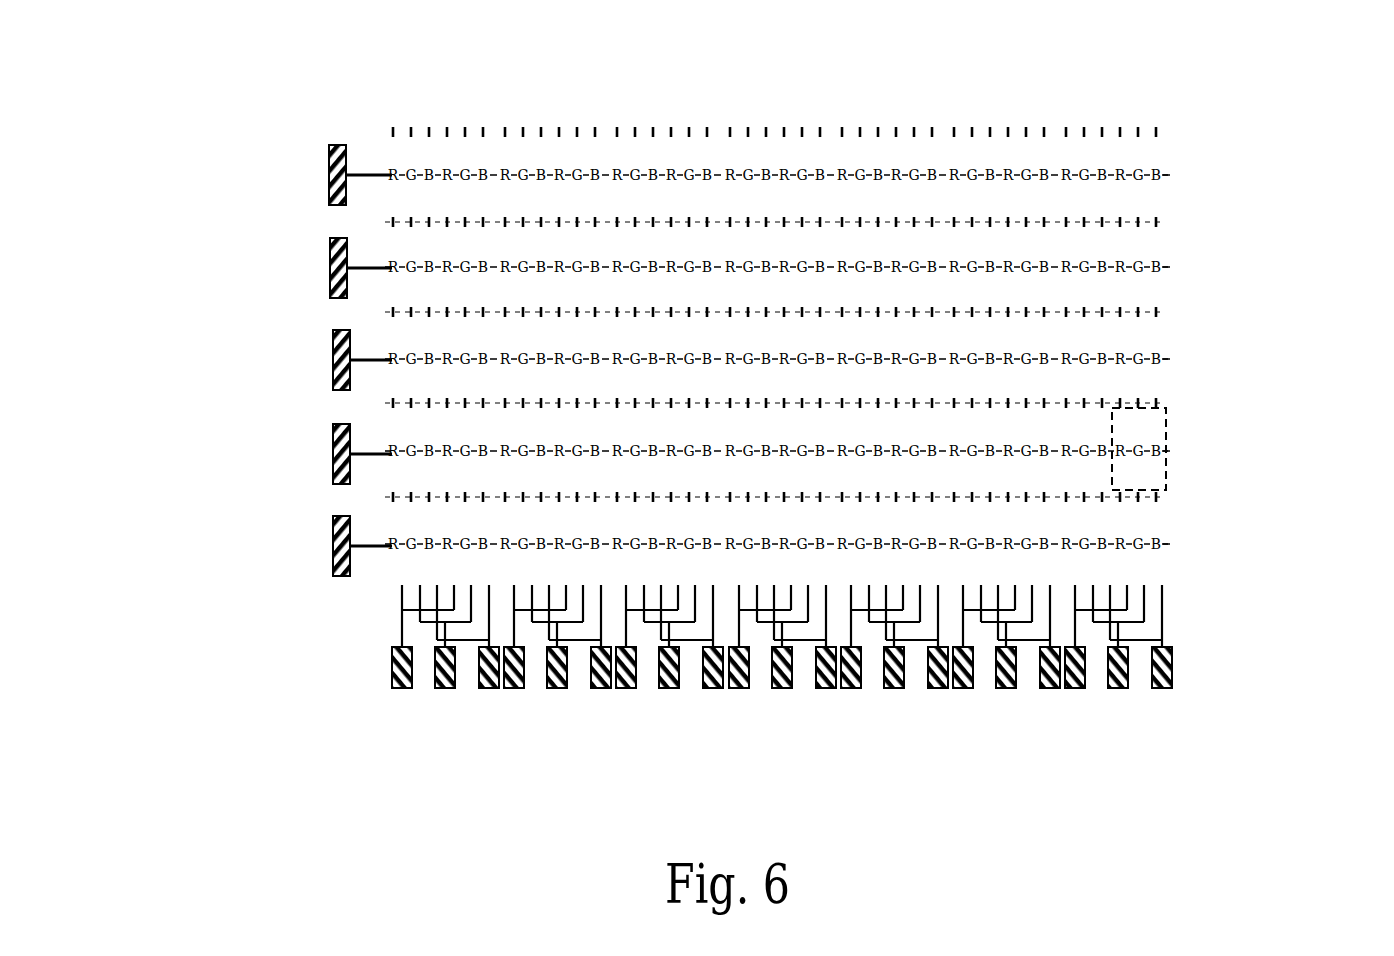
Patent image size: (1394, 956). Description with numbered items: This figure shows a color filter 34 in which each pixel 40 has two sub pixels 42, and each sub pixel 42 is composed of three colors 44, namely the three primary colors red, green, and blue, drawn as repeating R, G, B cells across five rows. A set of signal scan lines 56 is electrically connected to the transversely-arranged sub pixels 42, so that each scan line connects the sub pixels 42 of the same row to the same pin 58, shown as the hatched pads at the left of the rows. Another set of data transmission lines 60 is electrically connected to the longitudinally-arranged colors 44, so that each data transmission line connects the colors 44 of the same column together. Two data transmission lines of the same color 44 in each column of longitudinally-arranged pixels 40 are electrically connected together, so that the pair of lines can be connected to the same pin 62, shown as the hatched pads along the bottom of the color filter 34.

The color filter 34 is at (362, 653).
The pixel 40 is at (1168, 247).
The sub pixel 42 is at (1166, 460).
The color 44 is at (1158, 377).
The signal scan lines 56 is at (323, 587).
The pin 58 is at (330, 183).
The data transmission lines 60 is at (1343, 693).
The pin 62 is at (1083, 665).